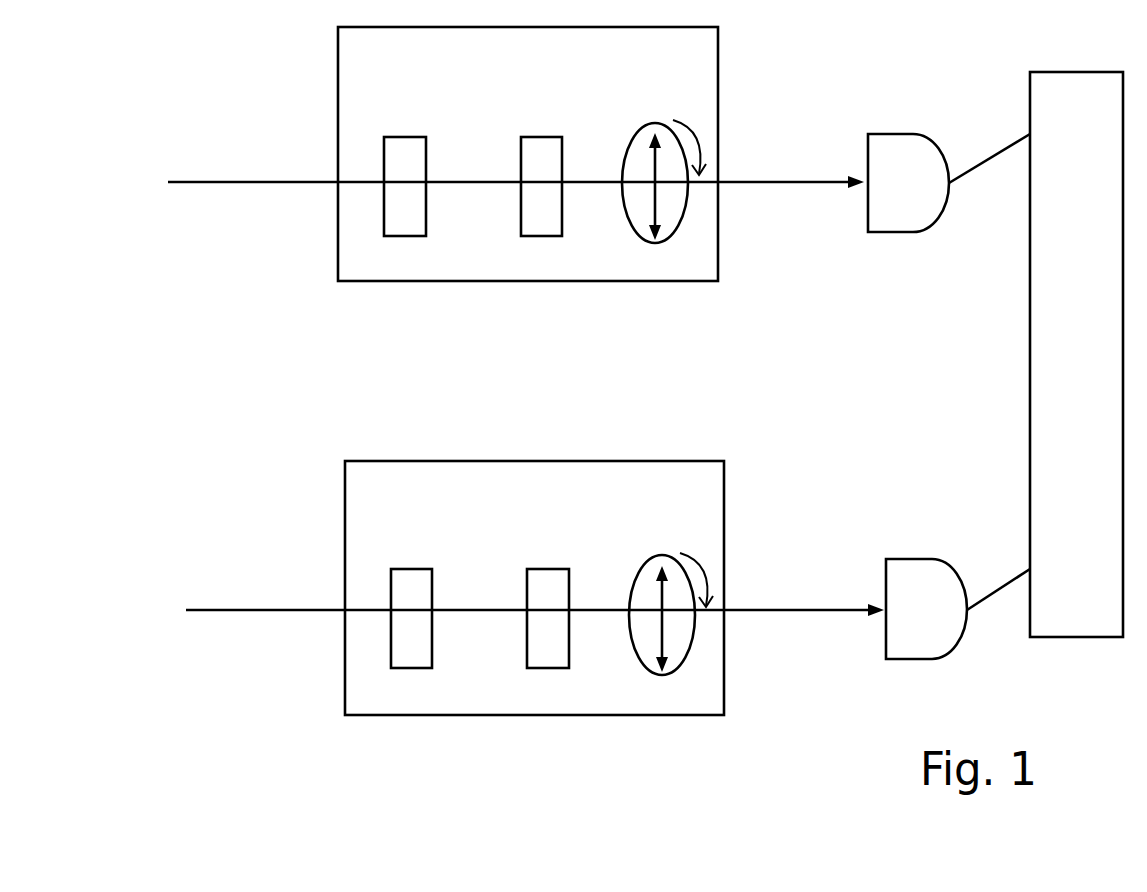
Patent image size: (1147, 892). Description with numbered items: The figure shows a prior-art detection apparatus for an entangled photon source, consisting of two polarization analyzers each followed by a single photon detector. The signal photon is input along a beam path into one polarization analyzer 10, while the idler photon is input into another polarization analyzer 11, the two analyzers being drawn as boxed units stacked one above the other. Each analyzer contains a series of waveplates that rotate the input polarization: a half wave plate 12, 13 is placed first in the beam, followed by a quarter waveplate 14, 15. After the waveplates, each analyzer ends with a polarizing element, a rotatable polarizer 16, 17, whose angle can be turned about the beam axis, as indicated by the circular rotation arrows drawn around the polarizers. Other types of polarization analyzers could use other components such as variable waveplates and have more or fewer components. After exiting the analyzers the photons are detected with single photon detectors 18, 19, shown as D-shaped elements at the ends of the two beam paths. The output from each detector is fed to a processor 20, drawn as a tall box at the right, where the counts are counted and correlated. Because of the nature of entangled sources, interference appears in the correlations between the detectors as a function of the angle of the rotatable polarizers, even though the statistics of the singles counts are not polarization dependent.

The polarization analyzer 10 is at (528, 190).
The polarization analyzer 11 is at (534, 622).
The half wave plate 12 is at (416, 579).
The half wave plate 13 is at (409, 146).
The quarter waveplate 14 is at (548, 579).
The quarter waveplate 15 is at (540, 146).
The rotatable polarizer 16 is at (671, 582).
The rotatable polarizer 17 is at (664, 150).
The single photon detector 18 is at (926, 556).
The single photon detector 19 is at (908, 129).
The processor 20 is at (1076, 326).